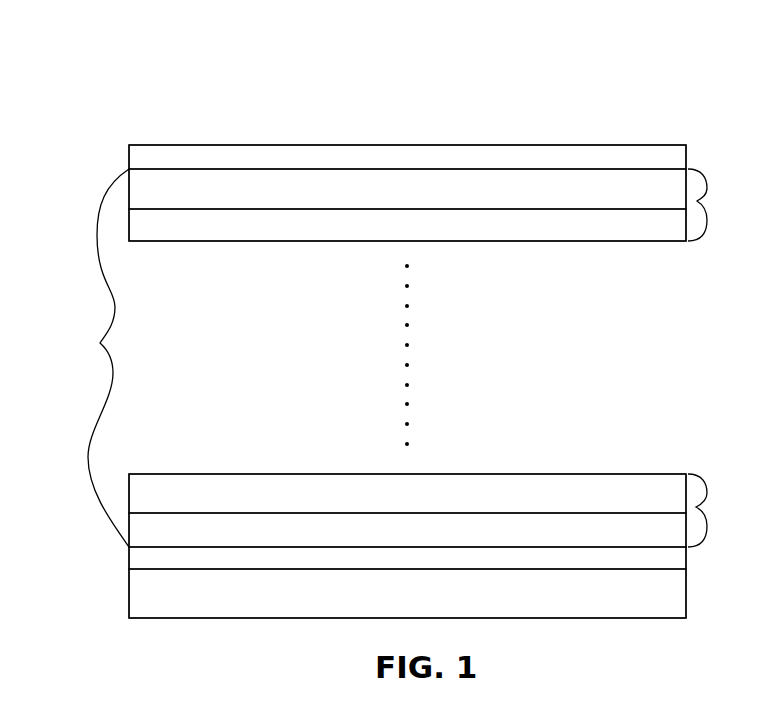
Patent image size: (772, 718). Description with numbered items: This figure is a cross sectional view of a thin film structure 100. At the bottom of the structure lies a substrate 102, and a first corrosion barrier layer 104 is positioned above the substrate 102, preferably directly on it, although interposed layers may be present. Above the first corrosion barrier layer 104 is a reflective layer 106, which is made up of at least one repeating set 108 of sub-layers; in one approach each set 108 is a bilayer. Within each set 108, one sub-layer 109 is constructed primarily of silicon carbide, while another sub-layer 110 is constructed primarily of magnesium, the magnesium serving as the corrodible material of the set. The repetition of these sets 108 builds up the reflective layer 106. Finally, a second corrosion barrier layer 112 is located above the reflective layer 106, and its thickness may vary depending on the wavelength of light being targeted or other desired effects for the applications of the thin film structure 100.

The thin film structure 100 is at (188, 66).
The substrate 102 is at (153, 597).
The first corrosion barrier layer 104 is at (153, 560).
The reflective layer 106 is at (91, 358).
The repeating set of sub-layers 108 is at (714, 358).
The sub-layer 109 is at (153, 225).
The sub-layer 110 is at (153, 190).
The second corrosion barrier layer 112 is at (153, 155).